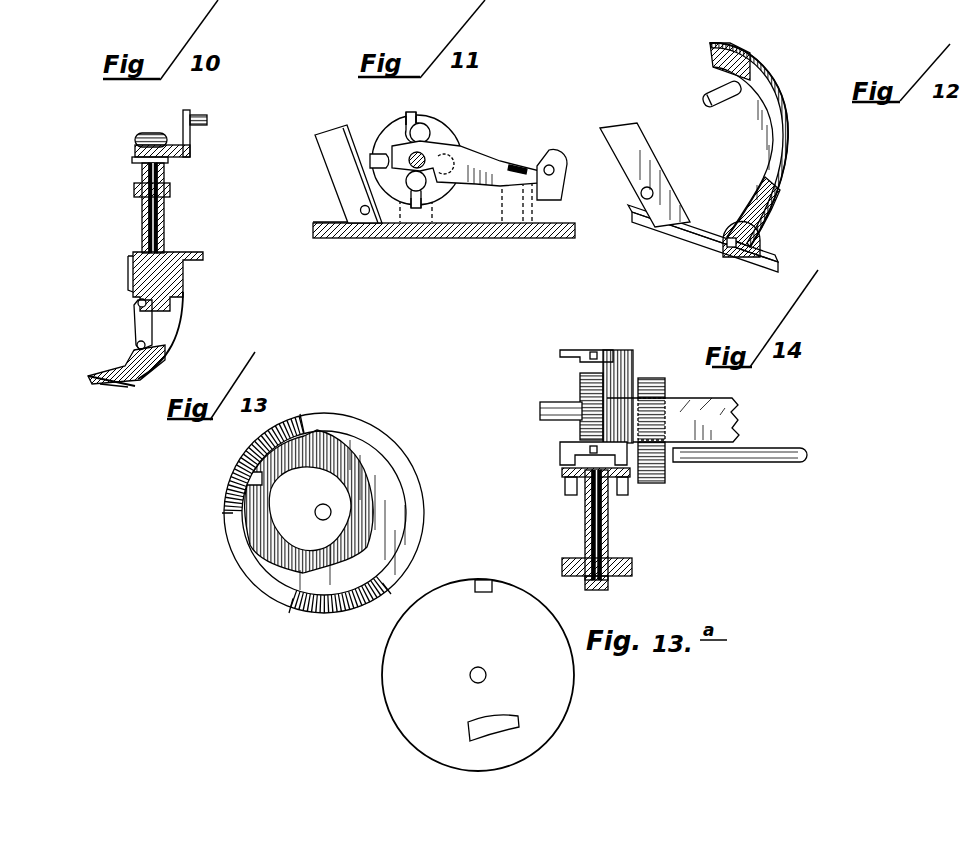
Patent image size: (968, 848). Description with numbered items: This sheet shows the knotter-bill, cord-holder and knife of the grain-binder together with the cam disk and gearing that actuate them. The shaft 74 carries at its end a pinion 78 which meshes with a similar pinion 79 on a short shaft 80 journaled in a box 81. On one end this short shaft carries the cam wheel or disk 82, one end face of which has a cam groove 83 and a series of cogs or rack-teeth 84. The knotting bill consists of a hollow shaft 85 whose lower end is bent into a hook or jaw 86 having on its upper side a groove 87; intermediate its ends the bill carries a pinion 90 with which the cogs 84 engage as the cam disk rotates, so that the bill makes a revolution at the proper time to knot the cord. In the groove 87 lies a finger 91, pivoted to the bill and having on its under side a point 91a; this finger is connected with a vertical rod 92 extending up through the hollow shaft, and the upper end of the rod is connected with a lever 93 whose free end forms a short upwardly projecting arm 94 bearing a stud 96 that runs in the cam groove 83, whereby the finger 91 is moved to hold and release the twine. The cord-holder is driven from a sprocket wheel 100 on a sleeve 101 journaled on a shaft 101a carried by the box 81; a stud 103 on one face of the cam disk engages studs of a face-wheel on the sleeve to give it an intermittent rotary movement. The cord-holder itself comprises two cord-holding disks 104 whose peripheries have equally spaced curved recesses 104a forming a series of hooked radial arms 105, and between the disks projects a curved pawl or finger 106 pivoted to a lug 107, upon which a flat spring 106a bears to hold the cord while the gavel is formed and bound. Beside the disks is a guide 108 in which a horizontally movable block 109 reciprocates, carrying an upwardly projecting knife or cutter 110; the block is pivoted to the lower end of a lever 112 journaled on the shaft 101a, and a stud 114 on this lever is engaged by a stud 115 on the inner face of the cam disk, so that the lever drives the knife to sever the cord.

In FIG. 14, the shaft 74 is at (749, 463).
In FIG. 14, the pinion 78 is at (651, 484).
In FIG. 14, the pinion 79 is at (651, 378).
In FIG. 14, the short shaft 80 is at (541, 409).
In FIG. 14, the box 81 is at (615, 375).
In FIG. 13, the cam wheel or disk 82 is at (380, 477).
In FIG. 13, the cam groove 83 is at (272, 556).
In FIG. 13, the cogs or rack-teeth 84 is at (303, 513).
In FIG. 10, the hollow shaft or rod 85 is at (133, 197).
In FIG. 10, the hook or jaw 86 is at (150, 363).
In FIG. 10, the groove 87 is at (115, 385).
In FIG. 10, the pinion 90 is at (185, 288).
In FIG. 10, the finger 91 is at (118, 370).
In FIG. 10, the point 91a is at (92, 380).
In FIG. 10, the vertical rod 92 is at (165, 226).
In FIG. 10, the lever 93 is at (177, 159).
In FIG. 10, the short upwardly projecting arm 94 is at (183, 127).
In FIG. 10, the stud 96 is at (207, 113).
In FIG. 14, the sprocket wheel 100 is at (625, 573).
In FIG. 14, the sleeve 101 is at (585, 521).
In FIG. 12, the shaft 101a is at (706, 97).
In FIG. 14, the shaft 101a is at (608, 547).
In FIG. 13A, the stud 103 is at (484, 580).
In FIG. 11, the cord-holding disks 104 is at (440, 133).
In FIG. 11, the curved recesses 104a is at (425, 258).
In FIG. 11, the hooked radial arms 105 is at (420, 120).
In FIG. 11, the curved pawl or finger 106 is at (430, 153).
In FIG. 11, the flat spring 106a is at (519, 176).
In FIG. 11, the lug 107 is at (565, 197).
In FIG. 11, the guide 108 is at (321, 241).
In FIG. 11, the horizontally movable block 109 is at (347, 222).
In FIG. 12, the horizontally movable block 109 is at (710, 243).
In FIG. 11, the knife or cutter 110 is at (332, 150).
In FIG. 12, the knife or cutter 110 is at (641, 166).
In FIG. 12, the lever 112 is at (784, 166).
In FIG. 12, the stud 114 is at (728, 38).
In FIG. 14, the stud 114 is at (564, 456).
In FIG. 13A, the stud 115 is at (494, 738).